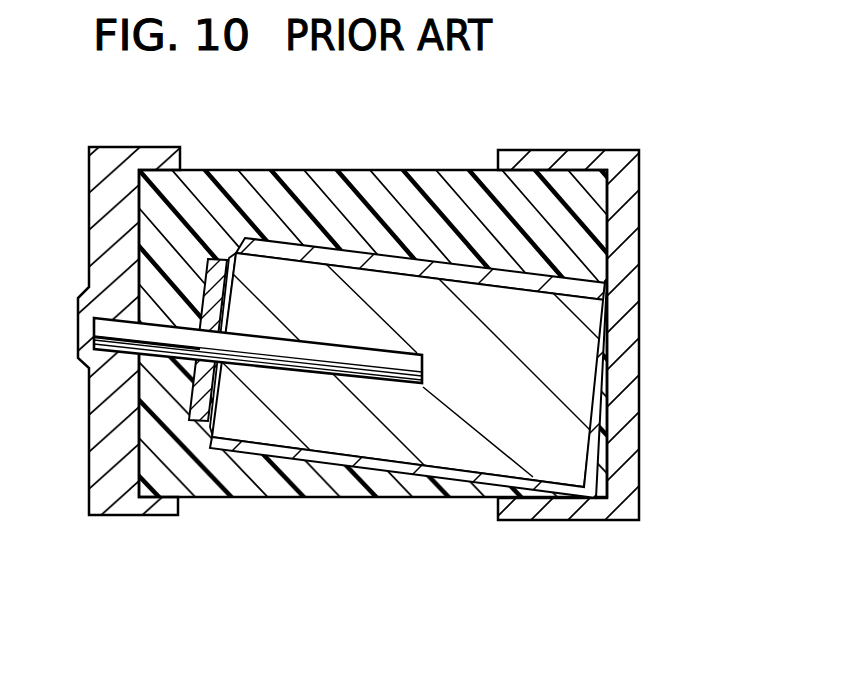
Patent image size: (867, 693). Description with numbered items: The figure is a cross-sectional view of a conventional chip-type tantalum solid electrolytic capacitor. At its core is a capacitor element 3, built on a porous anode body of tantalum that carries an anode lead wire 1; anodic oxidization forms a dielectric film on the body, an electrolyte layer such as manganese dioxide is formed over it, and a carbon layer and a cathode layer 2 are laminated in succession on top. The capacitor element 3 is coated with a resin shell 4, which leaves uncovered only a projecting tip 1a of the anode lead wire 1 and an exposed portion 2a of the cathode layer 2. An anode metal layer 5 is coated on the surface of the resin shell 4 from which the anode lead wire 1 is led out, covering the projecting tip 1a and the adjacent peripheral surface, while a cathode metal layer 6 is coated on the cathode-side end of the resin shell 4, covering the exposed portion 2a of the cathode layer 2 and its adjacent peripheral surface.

The anode lead wire 1 is at (106, 330).
The projecting tip of the anode lead wire 1a is at (92, 335).
The cathode layer 2 is at (383, 262).
The exposed portion of the cathode layer 2a is at (608, 374).
The capacitor element 3 is at (578, 327).
The resin shell 4 is at (293, 195).
The anode metal layer 5 is at (102, 192).
The cathode metal layer 6 is at (627, 437).